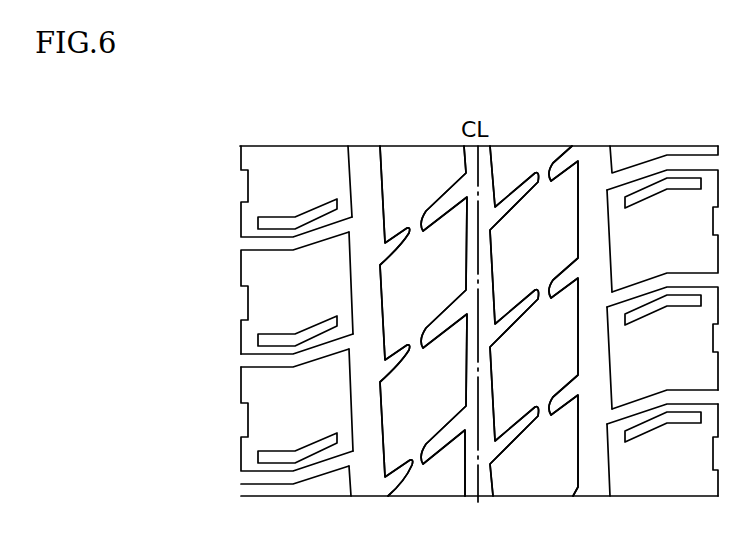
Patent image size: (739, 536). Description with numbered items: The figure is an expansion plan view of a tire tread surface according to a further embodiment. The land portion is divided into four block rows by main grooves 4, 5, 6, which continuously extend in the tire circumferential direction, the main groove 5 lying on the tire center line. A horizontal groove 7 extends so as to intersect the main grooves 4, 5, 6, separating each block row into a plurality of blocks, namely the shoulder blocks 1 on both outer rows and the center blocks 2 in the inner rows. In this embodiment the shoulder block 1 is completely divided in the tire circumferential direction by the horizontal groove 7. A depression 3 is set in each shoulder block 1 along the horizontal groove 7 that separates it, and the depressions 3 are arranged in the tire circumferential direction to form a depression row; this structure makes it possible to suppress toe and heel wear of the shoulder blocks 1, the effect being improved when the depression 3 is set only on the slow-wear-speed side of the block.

The shoulder block 1 is at (320, 154).
The center block 2 is at (430, 155).
The depression 3 is at (317, 328).
The main groove 4 is at (368, 157).
The main groove 5 is at (470, 155).
The main groove 6 is at (595, 152).
The horizontal groove 7 is at (313, 355).